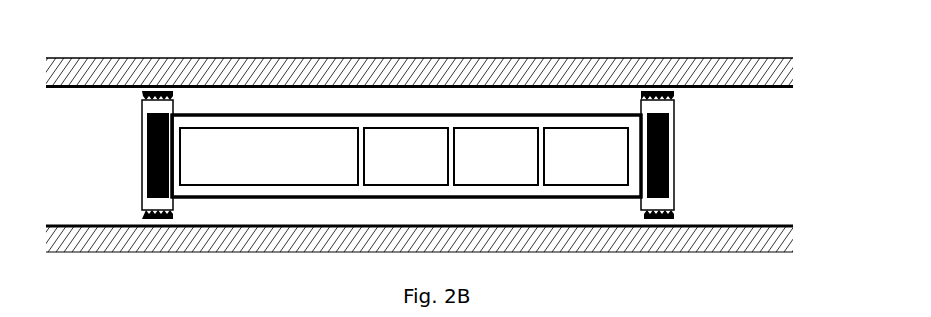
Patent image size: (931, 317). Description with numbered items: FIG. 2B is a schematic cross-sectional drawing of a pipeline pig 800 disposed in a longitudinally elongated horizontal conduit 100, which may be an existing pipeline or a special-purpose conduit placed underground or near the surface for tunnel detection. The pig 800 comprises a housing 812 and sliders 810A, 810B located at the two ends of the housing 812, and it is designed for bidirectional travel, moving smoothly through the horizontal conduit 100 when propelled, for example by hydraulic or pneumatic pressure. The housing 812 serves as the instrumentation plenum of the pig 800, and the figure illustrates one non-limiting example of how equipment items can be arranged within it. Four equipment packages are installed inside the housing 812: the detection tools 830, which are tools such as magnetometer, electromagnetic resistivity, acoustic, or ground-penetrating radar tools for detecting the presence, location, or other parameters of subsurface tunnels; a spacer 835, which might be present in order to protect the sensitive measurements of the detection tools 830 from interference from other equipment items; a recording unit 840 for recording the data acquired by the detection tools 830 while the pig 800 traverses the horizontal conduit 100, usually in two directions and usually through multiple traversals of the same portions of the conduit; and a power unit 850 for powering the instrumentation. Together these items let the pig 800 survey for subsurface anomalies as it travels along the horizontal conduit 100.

The horizontal conduit 100 is at (742, 93).
The pipeline pig 800 is at (90, 198).
The slider 810A is at (135, 208).
The slider 810B is at (678, 209).
The housing 812 is at (492, 201).
The detection tools 830 is at (278, 126).
The spacer 835 is at (405, 126).
The recording unit 840 is at (490, 126).
The power unit 850 is at (570, 126).